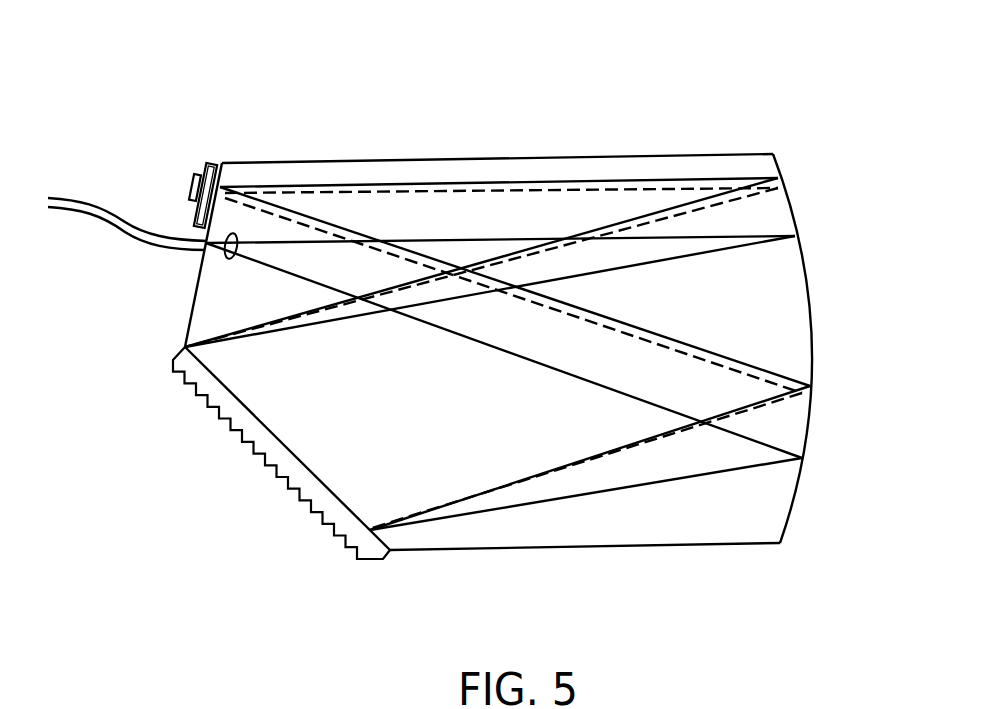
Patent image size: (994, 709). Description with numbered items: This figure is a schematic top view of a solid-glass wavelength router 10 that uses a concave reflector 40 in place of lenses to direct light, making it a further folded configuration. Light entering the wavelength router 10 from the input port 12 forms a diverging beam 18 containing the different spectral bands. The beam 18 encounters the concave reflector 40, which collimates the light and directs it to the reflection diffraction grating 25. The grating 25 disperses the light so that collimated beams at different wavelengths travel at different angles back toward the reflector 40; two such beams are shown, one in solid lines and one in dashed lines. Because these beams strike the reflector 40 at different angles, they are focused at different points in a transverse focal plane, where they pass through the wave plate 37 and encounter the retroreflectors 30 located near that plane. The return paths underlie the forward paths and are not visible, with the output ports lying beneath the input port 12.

The wavelength router 10 is at (181, 548).
The input port 12 is at (133, 240).
The diverging beam 18 is at (226, 260).
The reflection diffraction grating 25 is at (332, 523).
The retroreflectors (1 . . . N) 30 is at (189, 187).
The wave plate 37 is at (214, 161).
The concave reflector 40 is at (810, 285).